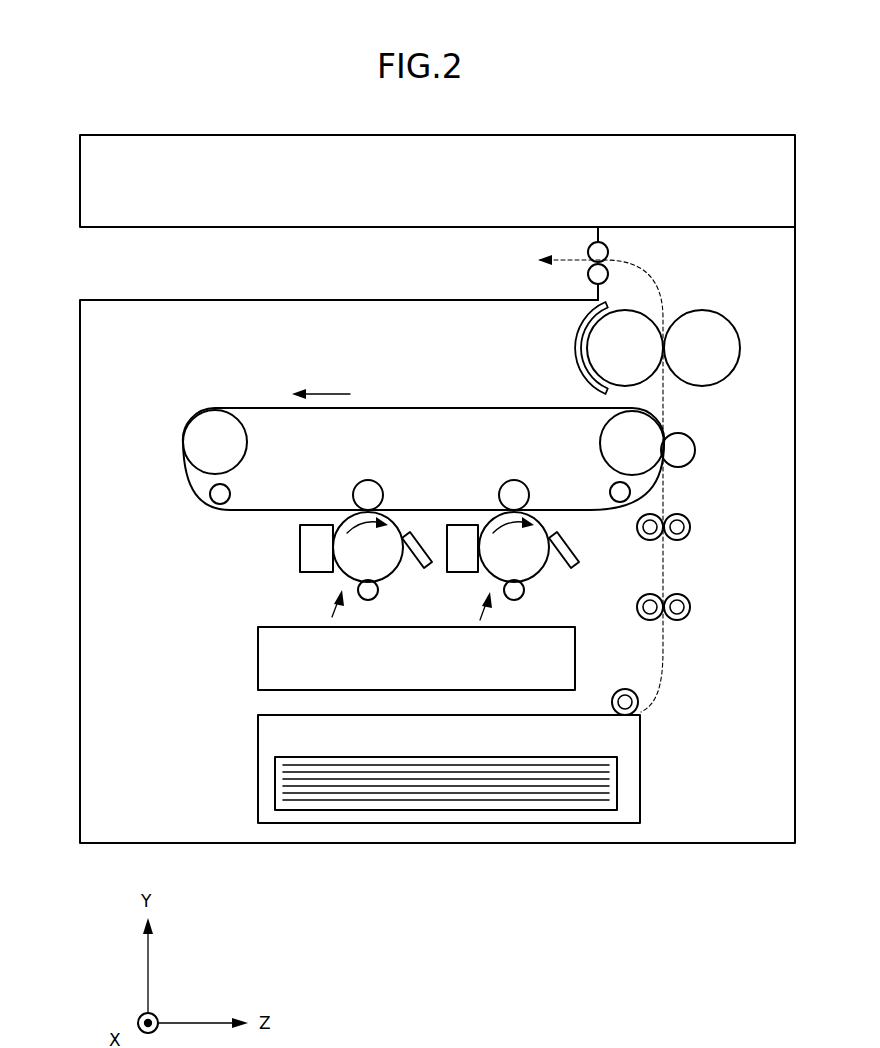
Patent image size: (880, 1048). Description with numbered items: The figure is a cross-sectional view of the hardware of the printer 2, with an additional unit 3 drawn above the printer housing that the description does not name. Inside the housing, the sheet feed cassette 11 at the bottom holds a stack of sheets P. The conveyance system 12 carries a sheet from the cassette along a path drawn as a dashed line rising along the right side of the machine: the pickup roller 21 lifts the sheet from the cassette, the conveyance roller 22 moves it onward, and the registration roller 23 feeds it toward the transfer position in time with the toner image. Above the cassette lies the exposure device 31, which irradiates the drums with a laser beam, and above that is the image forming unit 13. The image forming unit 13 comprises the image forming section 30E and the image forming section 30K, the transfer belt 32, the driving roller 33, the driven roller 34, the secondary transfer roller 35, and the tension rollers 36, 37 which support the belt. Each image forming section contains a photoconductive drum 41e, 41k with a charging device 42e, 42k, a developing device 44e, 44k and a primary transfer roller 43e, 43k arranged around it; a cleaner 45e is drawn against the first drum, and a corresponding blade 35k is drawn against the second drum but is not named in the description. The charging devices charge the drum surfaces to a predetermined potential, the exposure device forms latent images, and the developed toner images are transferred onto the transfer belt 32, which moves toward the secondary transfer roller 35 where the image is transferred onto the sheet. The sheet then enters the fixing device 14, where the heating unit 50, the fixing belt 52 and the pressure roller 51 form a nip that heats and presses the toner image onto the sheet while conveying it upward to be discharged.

The printer 2 is at (80, 431).
The image reading unit 3 is at (80, 193).
The sheet feed cassette 11 is at (641, 748).
The sheet P is at (618, 778).
The conveyance system 12 is at (645, 485).
The image forming unit 13 is at (450, 423).
The fixing device 14 is at (651, 310).
The pickup roller 21 is at (619, 690).
The conveyance roller 22 is at (694, 599).
The registration roller 23 is at (694, 521).
The image forming section 30E is at (345, 527).
The image forming section 30K is at (540, 525).
The exposure device 31 is at (258, 650).
The transfer belt 32 is at (368, 407).
The driving roller 33 is at (666, 410).
The driven roller 34 is at (211, 408).
The secondary transfer roller 35 is at (698, 448).
The cleaning blade (black) 35k is at (576, 543).
The tension roller 36 is at (208, 488).
The tension roller 37 is at (609, 487).
The photoconductive drum 41e is at (386, 565).
The photoconductive drum 41k is at (533, 565).
The charging device 42e is at (378, 594).
The charging device 42k is at (525, 594).
The primary transfer roller 43e is at (361, 481).
The primary transfer roller 43k is at (508, 481).
The developing device 44e is at (300, 548).
The developing device 44k is at (462, 573).
The cleaner 45e is at (420, 536).
The heating unit 50 is at (579, 333).
The pressure roller 51 is at (740, 329).
The fixing belt 52 is at (616, 314).